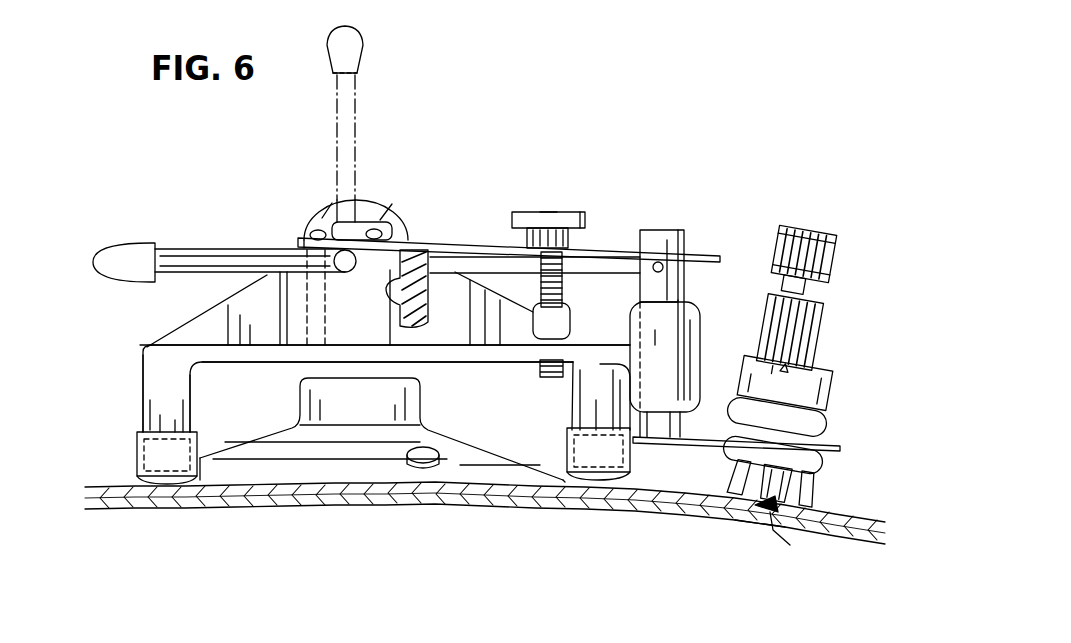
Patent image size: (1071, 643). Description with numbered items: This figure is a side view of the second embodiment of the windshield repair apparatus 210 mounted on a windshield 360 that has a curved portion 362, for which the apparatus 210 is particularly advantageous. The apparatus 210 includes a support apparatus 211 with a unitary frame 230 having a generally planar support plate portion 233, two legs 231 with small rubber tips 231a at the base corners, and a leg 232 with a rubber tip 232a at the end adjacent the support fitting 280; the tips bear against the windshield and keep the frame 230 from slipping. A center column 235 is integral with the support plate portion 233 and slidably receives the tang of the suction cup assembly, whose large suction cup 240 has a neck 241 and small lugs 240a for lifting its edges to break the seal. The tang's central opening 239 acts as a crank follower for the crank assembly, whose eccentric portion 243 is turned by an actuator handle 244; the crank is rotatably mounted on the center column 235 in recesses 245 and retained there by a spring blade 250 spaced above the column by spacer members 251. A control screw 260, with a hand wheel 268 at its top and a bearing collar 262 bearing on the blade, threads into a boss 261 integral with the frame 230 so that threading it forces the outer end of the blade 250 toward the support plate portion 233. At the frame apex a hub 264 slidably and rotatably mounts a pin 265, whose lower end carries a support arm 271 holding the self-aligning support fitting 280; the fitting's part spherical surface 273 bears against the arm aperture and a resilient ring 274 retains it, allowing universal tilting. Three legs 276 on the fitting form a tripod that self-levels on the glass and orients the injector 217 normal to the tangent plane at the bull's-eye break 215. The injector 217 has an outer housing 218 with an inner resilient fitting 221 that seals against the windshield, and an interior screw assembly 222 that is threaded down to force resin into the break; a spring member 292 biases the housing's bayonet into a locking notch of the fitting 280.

The windshield repair apparatus 210 is at (135, 328).
The support apparatus 211 is at (198, 310).
The bull's-eye break 215 is at (758, 508).
The injector 217 is at (842, 250).
The outer housing 218 is at (826, 320).
The inner resilient fitting 221 is at (789, 516).
The interior screw assembly 222 is at (782, 226).
The unitary frame 230 is at (141, 350).
The legs 231 is at (196, 400).
The rubber tips 231a is at (136, 448).
The leg 232 is at (571, 410).
The rubber tip 232a is at (632, 480).
The support plate portion 233 is at (478, 364).
The center column 235 is at (430, 248).
The central opening 239 is at (386, 206).
The suction cup 240 is at (470, 465).
The lugs 240a is at (412, 472).
The neck 241 is at (426, 406).
The eccentric portion 243 is at (310, 212).
The actuator handle 244 is at (171, 247).
The recesses 245 is at (350, 272).
The spring blade 250 is at (482, 238).
The spacer members 251 is at (302, 244).
The control screw 260 is at (584, 214).
The boss 261 is at (563, 288).
The bearing collar 262 is at (585, 234).
The hub 264 is at (700, 306).
The pin 265 is at (682, 234).
The hand wheel 268 is at (555, 212).
The support arm 271 is at (830, 422).
The part spherical surface 273 is at (843, 446).
The resilient ring 274 is at (828, 394).
The legs 276 is at (822, 492).
The support fitting 280 is at (826, 470).
The spring member 292 is at (812, 374).
The windshield 360 is at (266, 508).
The curved portion 362 is at (766, 526).